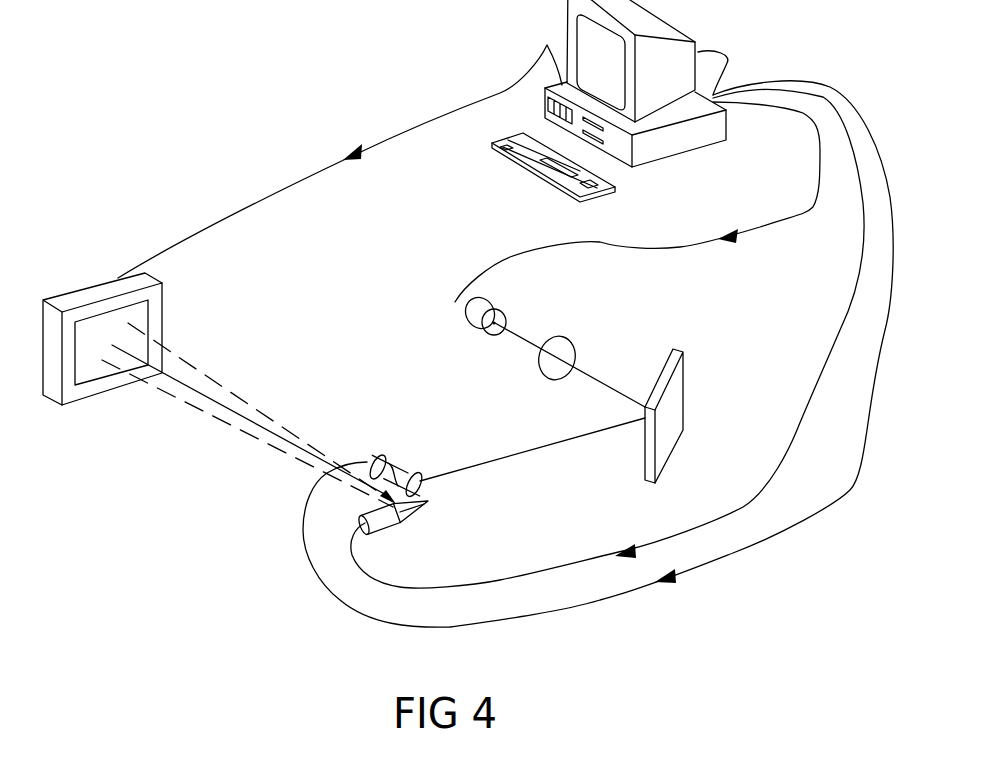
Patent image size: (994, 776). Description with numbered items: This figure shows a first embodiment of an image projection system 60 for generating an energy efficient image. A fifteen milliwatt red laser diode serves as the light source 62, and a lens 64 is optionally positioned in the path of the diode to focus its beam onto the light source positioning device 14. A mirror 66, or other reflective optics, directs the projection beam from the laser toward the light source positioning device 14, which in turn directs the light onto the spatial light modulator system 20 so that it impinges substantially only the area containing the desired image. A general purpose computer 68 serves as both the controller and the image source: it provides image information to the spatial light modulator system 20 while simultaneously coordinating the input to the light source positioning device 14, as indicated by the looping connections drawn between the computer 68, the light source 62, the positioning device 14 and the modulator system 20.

The image projection system 60 is at (348, 72).
The general purpose computer 68 is at (690, 37).
The spatial light modulator system 20 is at (163, 327).
The light source positioning device 14 is at (383, 455).
The light source 62 is at (467, 320).
The lens 64 is at (538, 373).
The mirror 66 is at (690, 440).